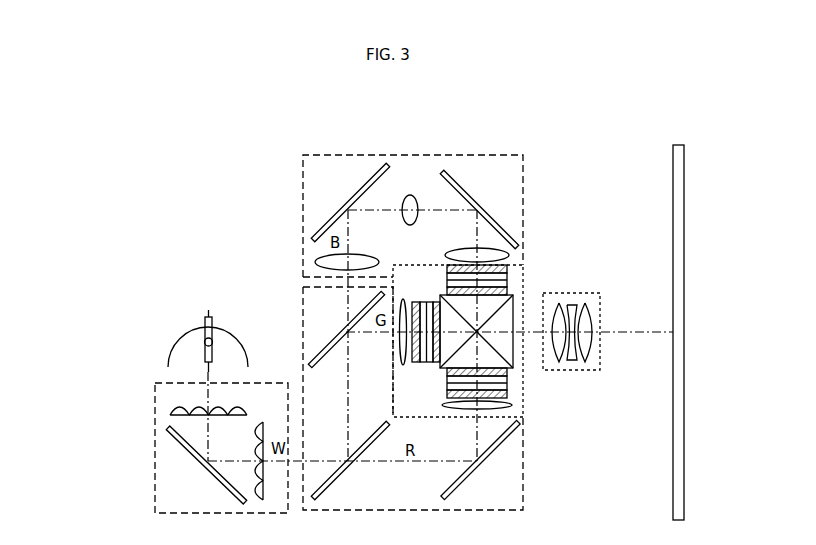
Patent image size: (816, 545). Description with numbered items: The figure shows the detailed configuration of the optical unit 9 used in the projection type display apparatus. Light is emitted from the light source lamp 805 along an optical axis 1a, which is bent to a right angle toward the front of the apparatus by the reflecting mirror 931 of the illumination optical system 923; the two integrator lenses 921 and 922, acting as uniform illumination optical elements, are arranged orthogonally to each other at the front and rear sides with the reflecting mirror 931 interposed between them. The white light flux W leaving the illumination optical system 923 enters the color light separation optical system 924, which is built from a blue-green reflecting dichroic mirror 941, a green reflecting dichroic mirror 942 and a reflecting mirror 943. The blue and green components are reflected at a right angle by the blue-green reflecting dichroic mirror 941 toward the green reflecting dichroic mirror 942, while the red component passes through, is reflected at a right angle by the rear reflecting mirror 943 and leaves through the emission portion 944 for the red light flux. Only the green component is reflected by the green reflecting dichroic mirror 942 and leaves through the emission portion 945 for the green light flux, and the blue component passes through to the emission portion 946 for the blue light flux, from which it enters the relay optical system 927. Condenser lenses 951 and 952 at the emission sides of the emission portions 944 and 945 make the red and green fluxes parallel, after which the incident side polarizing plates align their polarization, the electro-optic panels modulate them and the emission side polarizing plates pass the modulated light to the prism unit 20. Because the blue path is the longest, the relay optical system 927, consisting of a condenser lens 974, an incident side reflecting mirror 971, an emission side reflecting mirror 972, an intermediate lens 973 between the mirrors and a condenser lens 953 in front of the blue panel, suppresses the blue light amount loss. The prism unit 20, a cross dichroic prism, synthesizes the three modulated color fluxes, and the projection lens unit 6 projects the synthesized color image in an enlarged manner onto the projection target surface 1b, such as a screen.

The optical unit 9 is at (256, 156).
The light source lamp 805 is at (178, 342).
The optical axis 1a is at (208, 372).
The projection target surface 1b is at (673, 190).
The illumination optical system 923 is at (155, 418).
The integrator lens 921 is at (235, 416).
The integrator lens 922 is at (258, 422).
The reflecting mirror 931 is at (188, 448).
The color light separation optical system 924 is at (302, 300).
The relay optical system 927 is at (302, 222).
The emission portion for the red light flux 944 is at (463, 423).
The blue-green reflecting dichroic mirror 941 is at (345, 475).
The green reflecting dichroic mirror 942 is at (312, 368).
The reflecting mirror 943 is at (471, 470).
The emission portion for the green light flux 945 is at (393, 336).
The emission portion for the blue light flux 946 is at (345, 291).
The condenser lens 951 is at (513, 406).
The condenser lens 952 is at (404, 299).
The condenser lens 953 is at (460, 250).
The incident side reflecting mirror 971 is at (348, 205).
The emission side reflecting mirror 972 is at (484, 213).
The intermediate lens 973 is at (410, 195).
The condenser lens 974 is at (355, 255).
The prism unit 20 is at (513, 347).
The projection lens unit 6 is at (600, 345).